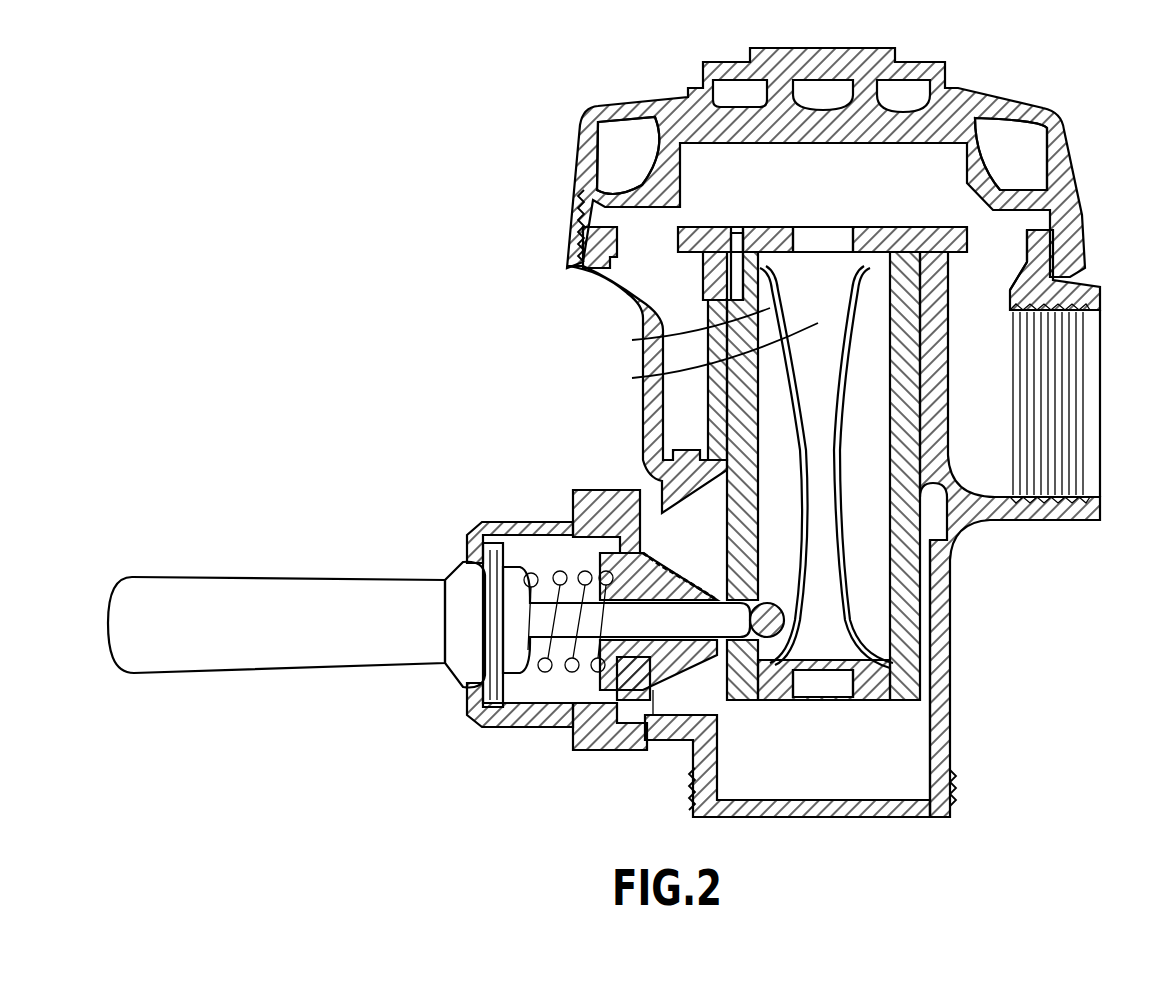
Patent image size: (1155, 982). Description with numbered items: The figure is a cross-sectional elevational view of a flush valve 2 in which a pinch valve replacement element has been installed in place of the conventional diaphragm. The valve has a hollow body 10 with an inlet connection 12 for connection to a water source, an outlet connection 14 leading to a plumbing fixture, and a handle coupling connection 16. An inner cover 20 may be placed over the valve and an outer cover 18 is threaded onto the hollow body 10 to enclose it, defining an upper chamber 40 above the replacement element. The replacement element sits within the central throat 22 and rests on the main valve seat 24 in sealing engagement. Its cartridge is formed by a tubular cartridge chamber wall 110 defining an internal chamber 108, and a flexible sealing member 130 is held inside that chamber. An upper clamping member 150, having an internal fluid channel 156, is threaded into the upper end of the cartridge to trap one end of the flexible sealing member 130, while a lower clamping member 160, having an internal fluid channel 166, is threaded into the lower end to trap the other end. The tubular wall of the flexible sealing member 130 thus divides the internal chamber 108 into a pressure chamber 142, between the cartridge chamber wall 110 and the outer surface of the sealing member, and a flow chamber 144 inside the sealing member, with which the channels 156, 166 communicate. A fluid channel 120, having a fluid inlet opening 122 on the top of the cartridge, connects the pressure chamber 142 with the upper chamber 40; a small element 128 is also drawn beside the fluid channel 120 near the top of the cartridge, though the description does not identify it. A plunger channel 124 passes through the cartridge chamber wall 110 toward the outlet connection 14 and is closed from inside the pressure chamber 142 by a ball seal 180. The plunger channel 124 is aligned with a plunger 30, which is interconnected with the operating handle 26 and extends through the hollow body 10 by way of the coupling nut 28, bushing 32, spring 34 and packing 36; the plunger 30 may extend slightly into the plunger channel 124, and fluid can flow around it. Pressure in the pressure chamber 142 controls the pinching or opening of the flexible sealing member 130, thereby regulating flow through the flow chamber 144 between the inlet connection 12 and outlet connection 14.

The flush valve 2 is at (512, 166).
The hollow body 10 is at (960, 697).
The inlet connection 12 is at (1085, 425).
The outlet connection 14 is at (888, 802).
The handle coupling connection 16 is at (650, 697).
The outer cover 18 is at (998, 100).
The inner cover 20 is at (1050, 146).
The central throat 22 is at (705, 397).
The main valve seat 24 is at (942, 256).
The operating handle 26 is at (246, 578).
The coupling nut 28 is at (608, 750).
The plunger 30 is at (708, 627).
The bushing 32 is at (562, 692).
The spring 34 is at (553, 585).
The packing 36 is at (665, 560).
The upper chamber 40 is at (697, 160).
The internal chamber 108 is at (880, 590).
The cartridge chamber wall 110 is at (932, 540).
The fluid channel 120 is at (708, 285).
The fluid inlet opening 122 is at (745, 225).
The plunger channel 124 is at (752, 606).
The pin 128 is at (730, 232).
The flexible sealing member 130 is at (828, 525).
The pressure chamber 142 is at (676, 333).
The flow chamber 144 is at (700, 358).
The upper clamping member 150 is at (893, 227).
The internal fluid channel 156 is at (830, 228).
The lower clamping member 160 is at (873, 685).
The internal fluid channel 166 is at (825, 700).
The ball seal 180 is at (795, 700).